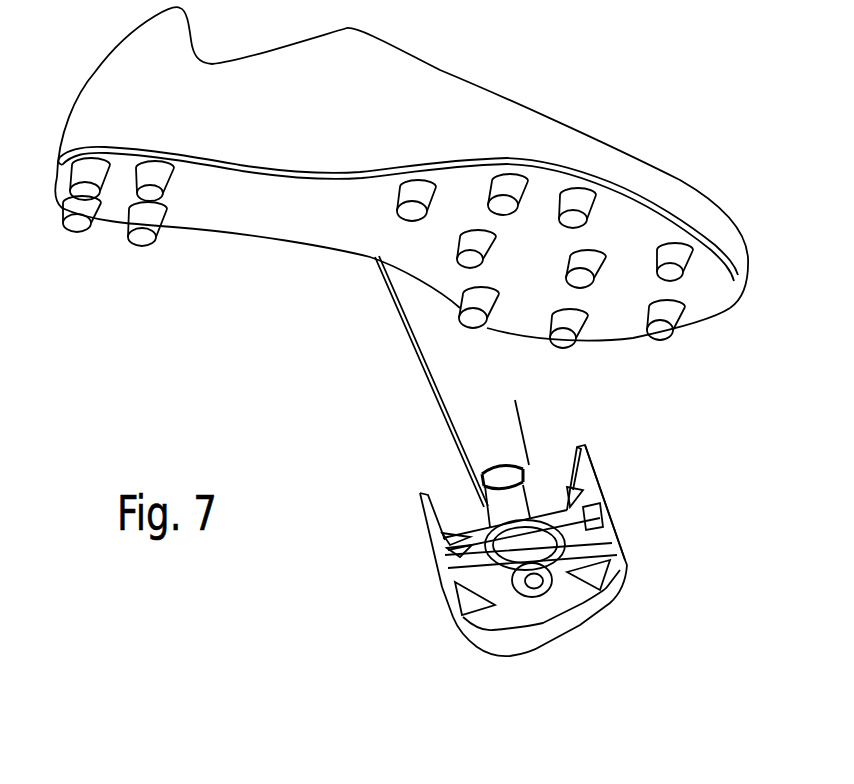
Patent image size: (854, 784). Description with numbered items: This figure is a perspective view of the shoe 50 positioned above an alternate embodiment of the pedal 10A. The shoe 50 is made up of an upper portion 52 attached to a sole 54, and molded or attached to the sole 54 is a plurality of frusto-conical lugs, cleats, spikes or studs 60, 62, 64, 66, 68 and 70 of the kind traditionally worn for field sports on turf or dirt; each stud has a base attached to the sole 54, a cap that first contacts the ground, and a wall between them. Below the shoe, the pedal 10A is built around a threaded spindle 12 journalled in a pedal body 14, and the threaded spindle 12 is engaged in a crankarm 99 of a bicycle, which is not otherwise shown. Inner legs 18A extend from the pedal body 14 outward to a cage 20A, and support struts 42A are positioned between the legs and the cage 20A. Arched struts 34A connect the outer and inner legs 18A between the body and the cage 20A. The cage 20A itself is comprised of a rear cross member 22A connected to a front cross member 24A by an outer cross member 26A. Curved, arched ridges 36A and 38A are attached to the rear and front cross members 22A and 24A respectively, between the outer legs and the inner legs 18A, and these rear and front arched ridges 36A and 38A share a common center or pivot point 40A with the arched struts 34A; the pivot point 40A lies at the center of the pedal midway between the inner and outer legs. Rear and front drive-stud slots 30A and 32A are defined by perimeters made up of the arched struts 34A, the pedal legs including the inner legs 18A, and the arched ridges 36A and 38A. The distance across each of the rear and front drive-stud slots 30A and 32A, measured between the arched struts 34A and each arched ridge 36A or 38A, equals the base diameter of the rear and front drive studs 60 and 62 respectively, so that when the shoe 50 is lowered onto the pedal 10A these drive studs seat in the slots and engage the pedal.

The pedal 10A is at (622, 502).
The threaded spindle 12 is at (505, 460).
The pedal body 14 is at (485, 467).
The inner legs 18A is at (465, 487).
The cage 20A is at (510, 638).
The rear cross member 22A is at (447, 610).
The front cross member 24A is at (597, 483).
The outer cross member 26A is at (567, 620).
The rear drive-stud slot 30A is at (453, 607).
The front drive-stud slot 32A is at (610, 533).
The arched struts 34A is at (567, 455).
The rear arched ridge 36A is at (448, 577).
The front arched ridge 38A is at (600, 518).
The pivot point 40A is at (560, 585).
The support struts 42A is at (462, 510).
The shoe 50 is at (450, 55).
The upper portion 52 is at (315, 87).
The sole 54 is at (292, 208).
The rear drive stud 60 is at (462, 262).
The front drive stud 62 is at (573, 280).
The stud 64 is at (150, 195).
The stud 66 is at (662, 335).
The stud 68 is at (406, 210).
The stud 70 is at (460, 327).
The crankarm 99 is at (405, 383).